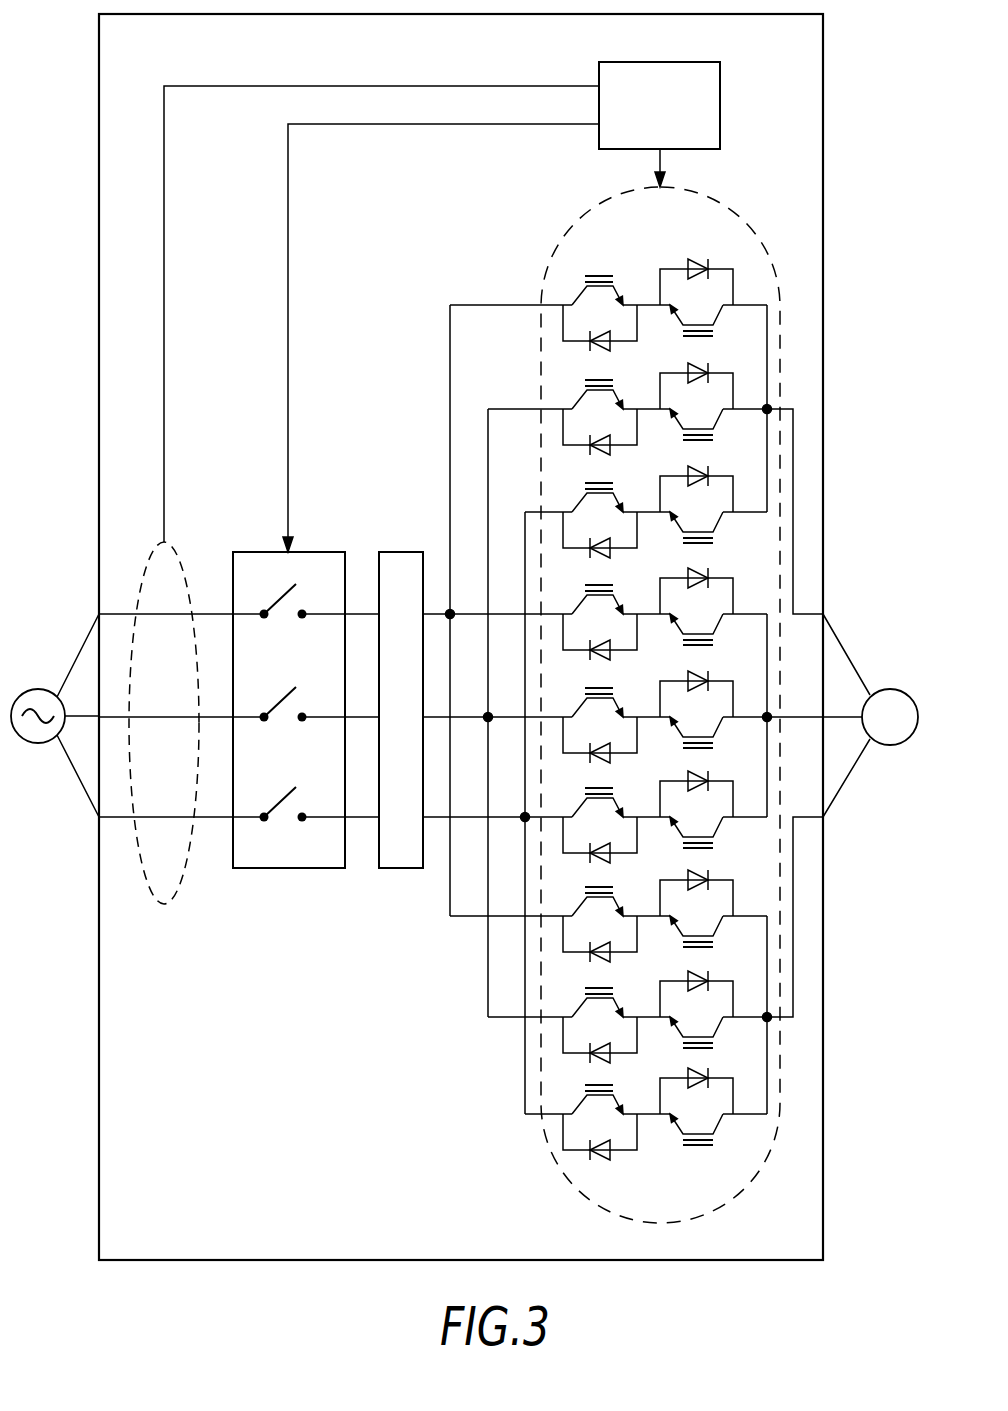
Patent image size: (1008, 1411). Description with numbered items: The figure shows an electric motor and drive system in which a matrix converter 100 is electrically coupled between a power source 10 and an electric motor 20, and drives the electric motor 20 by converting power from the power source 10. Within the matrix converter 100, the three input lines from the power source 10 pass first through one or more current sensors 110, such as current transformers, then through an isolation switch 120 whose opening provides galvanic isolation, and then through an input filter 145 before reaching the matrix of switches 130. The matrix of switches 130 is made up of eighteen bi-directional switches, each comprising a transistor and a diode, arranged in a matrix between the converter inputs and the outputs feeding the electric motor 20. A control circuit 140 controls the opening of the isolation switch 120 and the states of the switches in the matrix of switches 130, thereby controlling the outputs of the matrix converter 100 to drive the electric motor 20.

The power source 10 is at (37, 689).
The electric motor 20 is at (888, 689).
The matrix converter 100 is at (823, 1115).
The current sensors 110 is at (177, 890).
The isolation switch 120 is at (305, 868).
The matrix of switches 130 is at (565, 1173).
The control circuit 140 is at (720, 97).
The input filter 145 is at (407, 868).